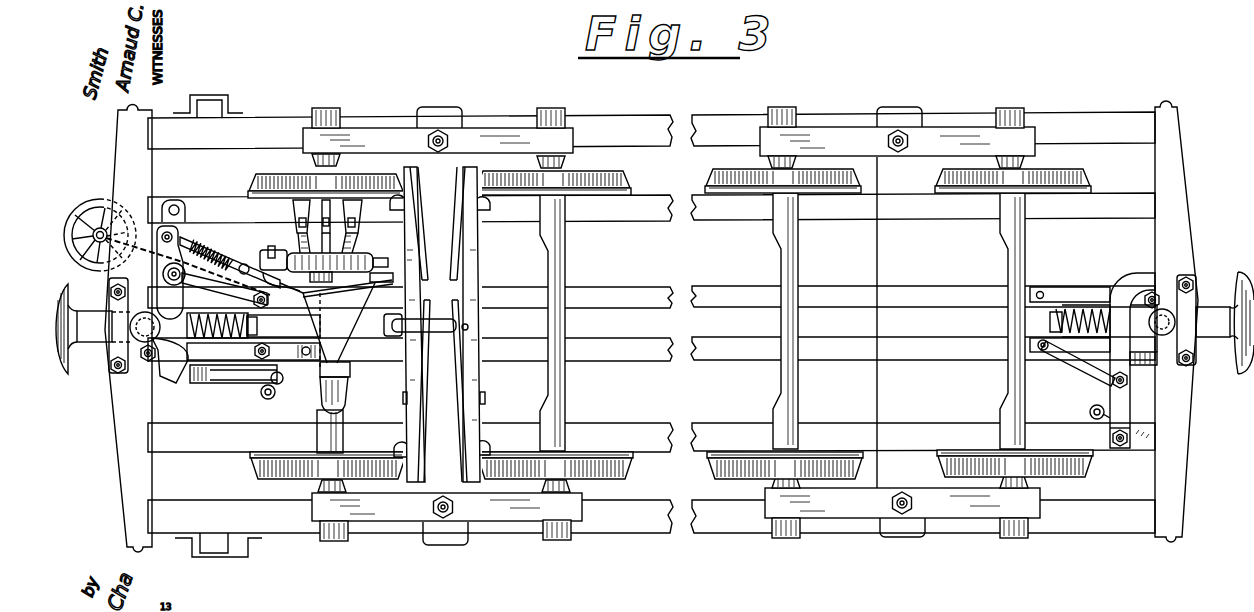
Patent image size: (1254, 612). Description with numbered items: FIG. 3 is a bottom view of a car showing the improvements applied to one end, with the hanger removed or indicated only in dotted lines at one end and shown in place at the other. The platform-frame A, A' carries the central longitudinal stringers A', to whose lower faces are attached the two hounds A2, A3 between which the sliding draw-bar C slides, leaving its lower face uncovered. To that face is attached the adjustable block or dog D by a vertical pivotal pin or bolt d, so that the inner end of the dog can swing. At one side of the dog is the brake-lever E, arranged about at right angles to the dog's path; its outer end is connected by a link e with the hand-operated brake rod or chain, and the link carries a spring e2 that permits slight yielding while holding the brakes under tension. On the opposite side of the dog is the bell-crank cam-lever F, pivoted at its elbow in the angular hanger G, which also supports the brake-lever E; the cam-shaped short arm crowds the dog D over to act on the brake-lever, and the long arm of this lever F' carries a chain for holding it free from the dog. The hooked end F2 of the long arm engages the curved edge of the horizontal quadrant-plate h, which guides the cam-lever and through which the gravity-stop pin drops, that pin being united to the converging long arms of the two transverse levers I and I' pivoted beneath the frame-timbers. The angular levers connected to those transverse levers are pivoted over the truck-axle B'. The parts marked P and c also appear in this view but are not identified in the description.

The platform-frame A is at (651, 326).
The central longitudinal joists or stringers A' is at (651, 323).
The hound A2 is at (223, 284).
The hound A3 is at (1087, 348).
The truck-axle B' is at (315, 431).
The sliding draw-bar C is at (93, 329).
The adjustable block or dog D is at (167, 372).
The brake-lever E is at (192, 248).
The cam-lever F is at (230, 391).
The lever F' is at (254, 395).
The hook F2 is at (352, 375).
The angular hanger G is at (146, 388).
The transverse lever I is at (283, 326).
The transverse lever I' is at (417, 323).
The brake shoe hangers P is at (326, 241).
The brake chain c is at (167, 247).
The vertical pivotal pin or bolt d is at (142, 352).
The link e is at (316, 293).
The spring e2 is at (212, 256).
The horizontal quadrant-plate h is at (338, 395).